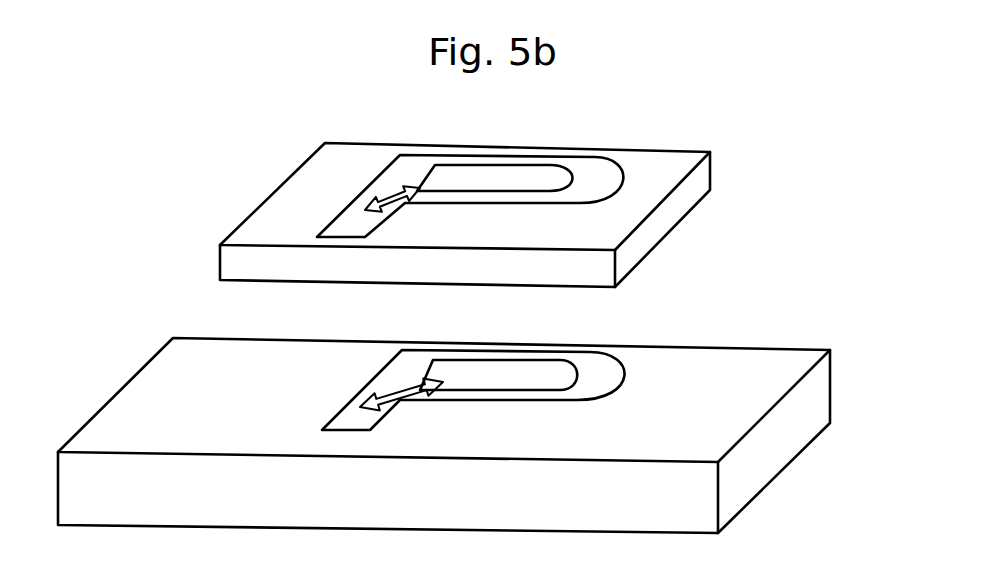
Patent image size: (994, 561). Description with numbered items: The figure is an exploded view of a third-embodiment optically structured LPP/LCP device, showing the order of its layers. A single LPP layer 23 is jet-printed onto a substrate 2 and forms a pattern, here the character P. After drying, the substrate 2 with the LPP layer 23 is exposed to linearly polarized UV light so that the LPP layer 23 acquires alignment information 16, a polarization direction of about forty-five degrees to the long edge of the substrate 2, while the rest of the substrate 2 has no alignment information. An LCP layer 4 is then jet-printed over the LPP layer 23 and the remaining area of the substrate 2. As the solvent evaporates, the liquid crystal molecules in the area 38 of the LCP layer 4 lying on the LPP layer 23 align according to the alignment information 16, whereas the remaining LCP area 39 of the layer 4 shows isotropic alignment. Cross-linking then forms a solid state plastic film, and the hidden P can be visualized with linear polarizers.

The substrate 2 is at (817, 408).
The LCP layer 4 is at (500, 189).
The alignment information 16 is at (397, 388).
The LPP layer 23 is at (602, 372).
The aligned area of the LCP layer 38 is at (600, 180).
The remaining LCP area 39 is at (305, 180).